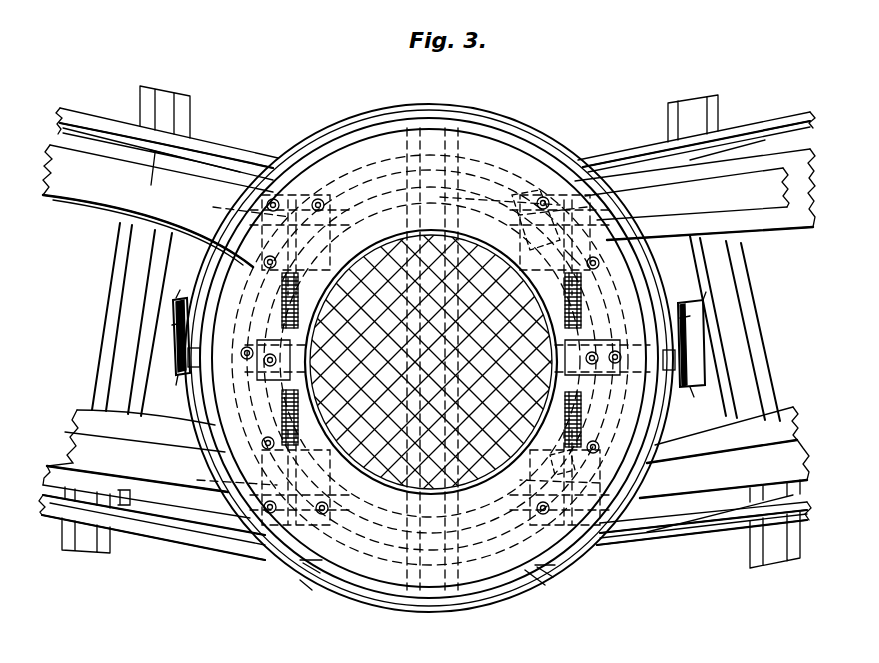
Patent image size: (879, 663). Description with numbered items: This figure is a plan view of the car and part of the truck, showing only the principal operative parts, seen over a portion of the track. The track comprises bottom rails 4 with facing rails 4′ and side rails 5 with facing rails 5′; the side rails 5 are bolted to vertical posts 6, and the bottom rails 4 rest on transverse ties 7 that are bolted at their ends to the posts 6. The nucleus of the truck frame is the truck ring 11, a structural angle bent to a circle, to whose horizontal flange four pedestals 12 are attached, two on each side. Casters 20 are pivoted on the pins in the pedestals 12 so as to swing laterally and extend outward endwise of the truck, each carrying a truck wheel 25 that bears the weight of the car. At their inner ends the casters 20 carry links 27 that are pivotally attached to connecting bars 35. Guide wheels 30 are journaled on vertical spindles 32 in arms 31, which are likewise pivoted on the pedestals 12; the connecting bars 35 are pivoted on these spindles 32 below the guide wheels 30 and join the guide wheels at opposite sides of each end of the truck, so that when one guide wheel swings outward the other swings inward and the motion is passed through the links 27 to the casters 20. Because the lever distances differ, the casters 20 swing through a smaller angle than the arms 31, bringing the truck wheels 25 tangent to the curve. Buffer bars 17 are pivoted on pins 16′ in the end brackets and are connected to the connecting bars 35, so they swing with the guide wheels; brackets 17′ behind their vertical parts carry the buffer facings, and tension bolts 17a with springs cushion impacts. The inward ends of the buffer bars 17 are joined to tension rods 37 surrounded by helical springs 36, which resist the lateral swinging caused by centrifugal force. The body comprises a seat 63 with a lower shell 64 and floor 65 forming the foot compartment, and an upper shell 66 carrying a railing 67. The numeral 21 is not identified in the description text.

The bottom rails 4 is at (83, 210).
The facing rails 4′ is at (443, 324).
The side rails 5 is at (217, 150).
The facing rails 5′ is at (156, 156).
The vertical posts 6 is at (170, 98).
The transverse ties 7 is at (410, 137).
The truck ring 11 is at (478, 197).
The pedestals 12 is at (513, 197).
The pins 16′ is at (272, 360).
The buffer bars 17 is at (228, 337).
The brackets 17′ is at (178, 296).
The tension bolts 17a is at (175, 328).
The casters 20 is at (285, 203).
The bolt 21 is at (600, 264).
The truck wheel 25 is at (262, 216).
The links 27 is at (697, 447).
The guide wheels 30 is at (315, 193).
The arms 31 is at (325, 200).
The spindles 32 is at (322, 200).
The connecting bars 35 is at (270, 410).
The helical springs 36 is at (300, 255).
The tension rods 37 is at (187, 357).
The seat 63 is at (343, 563).
The lower shell 64 is at (554, 453).
The floor 65 is at (566, 252).
The upper shell 66 is at (530, 590).
The railing 67 is at (300, 590).